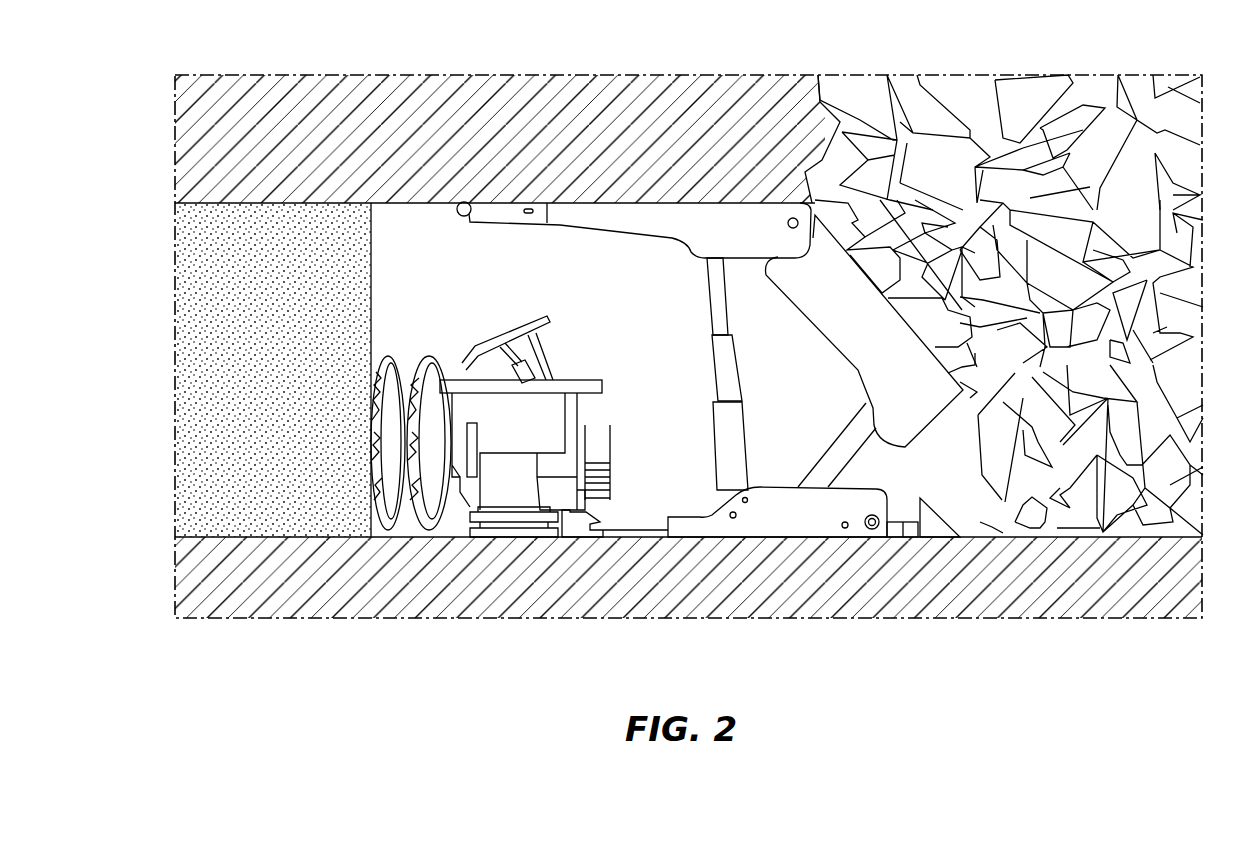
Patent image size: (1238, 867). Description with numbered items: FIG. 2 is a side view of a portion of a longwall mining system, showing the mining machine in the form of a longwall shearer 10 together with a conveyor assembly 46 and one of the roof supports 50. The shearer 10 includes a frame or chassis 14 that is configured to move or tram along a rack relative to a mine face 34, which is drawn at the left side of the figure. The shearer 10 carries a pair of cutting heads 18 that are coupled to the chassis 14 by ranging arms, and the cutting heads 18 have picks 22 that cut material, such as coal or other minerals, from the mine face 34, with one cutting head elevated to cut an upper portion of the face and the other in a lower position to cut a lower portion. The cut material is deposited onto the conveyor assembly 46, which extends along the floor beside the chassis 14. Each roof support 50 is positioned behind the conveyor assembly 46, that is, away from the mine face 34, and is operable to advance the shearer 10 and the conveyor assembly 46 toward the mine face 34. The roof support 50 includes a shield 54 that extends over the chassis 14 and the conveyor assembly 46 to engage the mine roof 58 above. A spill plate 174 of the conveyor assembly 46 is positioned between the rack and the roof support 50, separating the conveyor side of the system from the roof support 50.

The mine roof 58 is at (273, 96).
The shield 54 is at (733, 218).
The mine face 34 is at (372, 244).
The longwall shearer 10 is at (505, 305).
The picks 22 is at (415, 358).
The cutting heads 18 is at (422, 400).
The frame or chassis 14 is at (558, 413).
The spill plate 174 is at (612, 452).
The roof support 50 is at (872, 457).
The conveyor assembly 46 is at (504, 548).